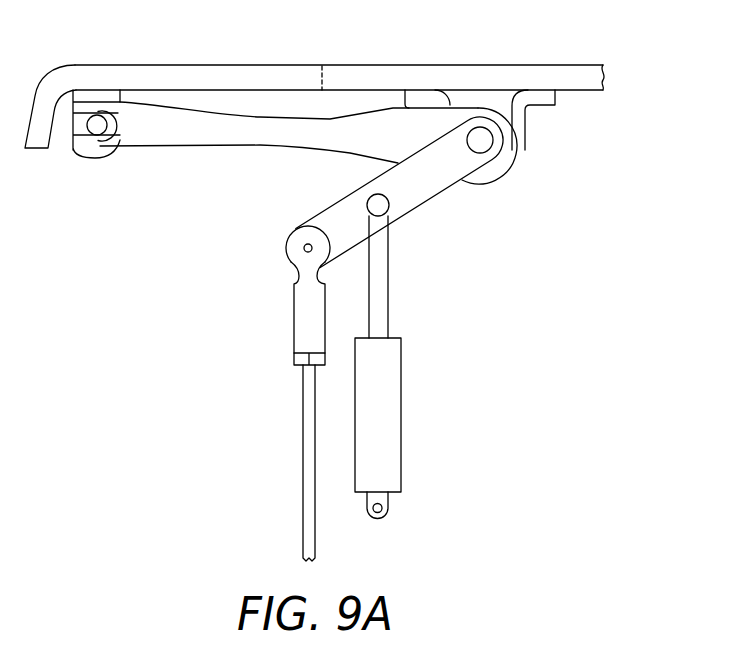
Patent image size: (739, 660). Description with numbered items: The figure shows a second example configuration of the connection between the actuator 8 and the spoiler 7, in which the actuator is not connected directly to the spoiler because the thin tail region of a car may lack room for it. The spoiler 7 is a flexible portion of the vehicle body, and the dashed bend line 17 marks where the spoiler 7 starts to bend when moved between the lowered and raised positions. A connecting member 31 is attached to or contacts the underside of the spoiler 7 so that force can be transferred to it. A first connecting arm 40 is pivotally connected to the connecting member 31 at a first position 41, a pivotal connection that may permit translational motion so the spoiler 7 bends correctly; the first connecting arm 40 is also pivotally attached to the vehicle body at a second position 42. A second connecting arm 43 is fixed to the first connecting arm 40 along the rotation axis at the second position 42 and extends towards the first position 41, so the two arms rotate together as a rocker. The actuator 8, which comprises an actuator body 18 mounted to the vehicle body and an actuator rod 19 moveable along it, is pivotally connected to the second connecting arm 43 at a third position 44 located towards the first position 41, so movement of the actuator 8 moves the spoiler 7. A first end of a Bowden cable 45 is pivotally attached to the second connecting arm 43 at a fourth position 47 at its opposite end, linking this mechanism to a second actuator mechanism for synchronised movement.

The spoiler 7 is at (193, 80).
The actuator 8 is at (421, 367).
The bend line 17 is at (324, 72).
The actuator body 18 is at (395, 437).
The actuator rod 19 is at (381, 293).
The connecting member 31 is at (98, 96).
The first connecting arm 40 is at (192, 137).
The first position 41 is at (98, 129).
The second position 42 is at (485, 139).
The second connecting arm 43 is at (428, 191).
The third position 44 is at (368, 204).
The Bowden cable 45 is at (300, 324).
The fourth position 47 is at (303, 246).